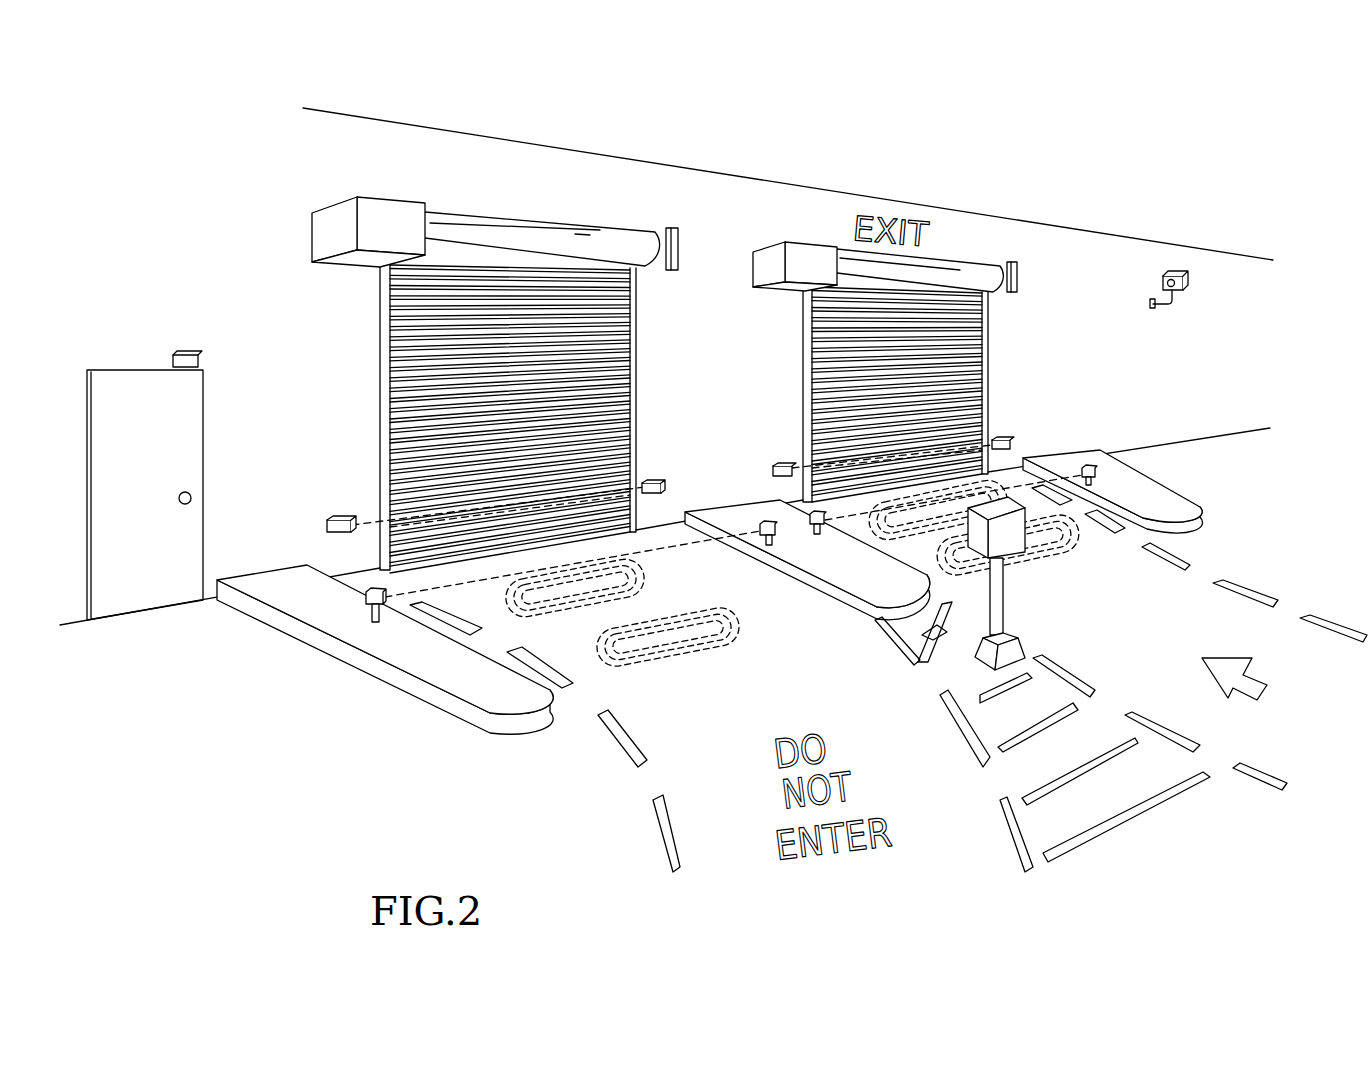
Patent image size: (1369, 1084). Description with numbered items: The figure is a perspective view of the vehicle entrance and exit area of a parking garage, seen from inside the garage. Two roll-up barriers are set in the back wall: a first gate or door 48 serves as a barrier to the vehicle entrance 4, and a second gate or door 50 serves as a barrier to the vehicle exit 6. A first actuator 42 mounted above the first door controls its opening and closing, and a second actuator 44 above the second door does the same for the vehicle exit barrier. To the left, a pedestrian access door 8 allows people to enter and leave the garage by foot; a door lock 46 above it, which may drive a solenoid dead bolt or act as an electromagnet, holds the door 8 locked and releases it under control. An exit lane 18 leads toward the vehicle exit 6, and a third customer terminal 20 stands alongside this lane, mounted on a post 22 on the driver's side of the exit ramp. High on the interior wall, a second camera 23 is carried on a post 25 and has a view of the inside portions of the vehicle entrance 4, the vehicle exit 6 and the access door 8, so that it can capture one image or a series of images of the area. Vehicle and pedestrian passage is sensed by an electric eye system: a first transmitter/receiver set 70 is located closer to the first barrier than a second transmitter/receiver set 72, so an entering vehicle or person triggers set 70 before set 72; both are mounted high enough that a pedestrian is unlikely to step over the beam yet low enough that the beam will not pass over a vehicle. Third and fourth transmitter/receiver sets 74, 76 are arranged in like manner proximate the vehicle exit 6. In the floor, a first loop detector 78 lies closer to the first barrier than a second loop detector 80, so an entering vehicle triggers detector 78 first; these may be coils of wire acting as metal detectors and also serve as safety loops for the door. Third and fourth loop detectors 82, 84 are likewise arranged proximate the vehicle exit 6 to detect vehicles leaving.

The vehicle entrance 4 is at (360, 370).
The vehicle exit 6 is at (1008, 342).
The access door 8 is at (197, 458).
The exit lane 18 is at (1170, 659).
The third customer terminal 20 is at (1037, 573).
The post 22 is at (1004, 610).
The second camera 23 is at (1188, 278).
The post 25 is at (1160, 303).
The first actuator 42 is at (375, 205).
The second actuator 44 is at (799, 246).
The door lock 46 is at (183, 353).
The first door 48 is at (625, 357).
The second door 50 is at (826, 338).
The first transmitter/receiver set 70 is at (340, 514).
The second transmitter/receiver set 72 is at (366, 597).
The third transmitter/receiver set 74 is at (780, 465).
The fourth transmitter/receiver set 76 is at (823, 529).
The first loop detector 78 is at (650, 575).
The second loop detector 80 is at (745, 627).
The third loop detector 82 is at (898, 537).
The fourth loop detector 84 is at (1080, 538).